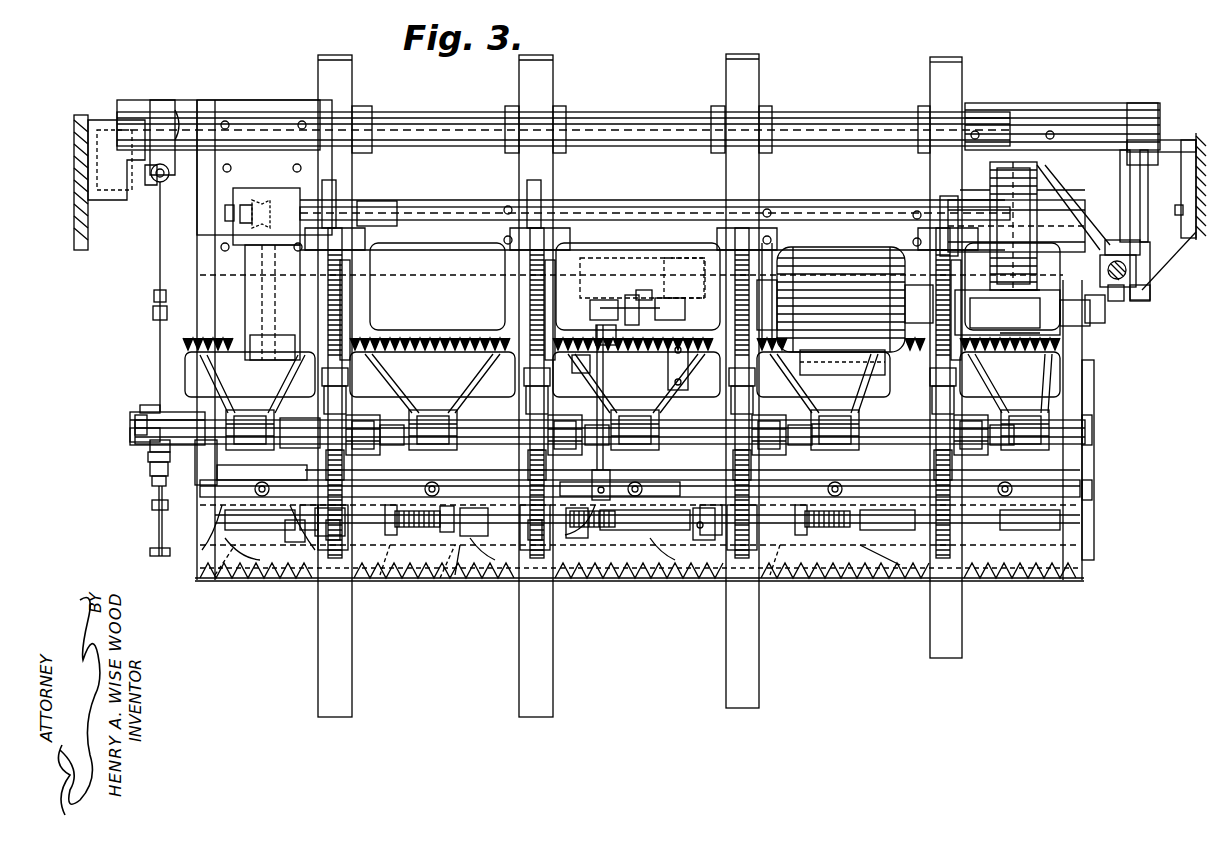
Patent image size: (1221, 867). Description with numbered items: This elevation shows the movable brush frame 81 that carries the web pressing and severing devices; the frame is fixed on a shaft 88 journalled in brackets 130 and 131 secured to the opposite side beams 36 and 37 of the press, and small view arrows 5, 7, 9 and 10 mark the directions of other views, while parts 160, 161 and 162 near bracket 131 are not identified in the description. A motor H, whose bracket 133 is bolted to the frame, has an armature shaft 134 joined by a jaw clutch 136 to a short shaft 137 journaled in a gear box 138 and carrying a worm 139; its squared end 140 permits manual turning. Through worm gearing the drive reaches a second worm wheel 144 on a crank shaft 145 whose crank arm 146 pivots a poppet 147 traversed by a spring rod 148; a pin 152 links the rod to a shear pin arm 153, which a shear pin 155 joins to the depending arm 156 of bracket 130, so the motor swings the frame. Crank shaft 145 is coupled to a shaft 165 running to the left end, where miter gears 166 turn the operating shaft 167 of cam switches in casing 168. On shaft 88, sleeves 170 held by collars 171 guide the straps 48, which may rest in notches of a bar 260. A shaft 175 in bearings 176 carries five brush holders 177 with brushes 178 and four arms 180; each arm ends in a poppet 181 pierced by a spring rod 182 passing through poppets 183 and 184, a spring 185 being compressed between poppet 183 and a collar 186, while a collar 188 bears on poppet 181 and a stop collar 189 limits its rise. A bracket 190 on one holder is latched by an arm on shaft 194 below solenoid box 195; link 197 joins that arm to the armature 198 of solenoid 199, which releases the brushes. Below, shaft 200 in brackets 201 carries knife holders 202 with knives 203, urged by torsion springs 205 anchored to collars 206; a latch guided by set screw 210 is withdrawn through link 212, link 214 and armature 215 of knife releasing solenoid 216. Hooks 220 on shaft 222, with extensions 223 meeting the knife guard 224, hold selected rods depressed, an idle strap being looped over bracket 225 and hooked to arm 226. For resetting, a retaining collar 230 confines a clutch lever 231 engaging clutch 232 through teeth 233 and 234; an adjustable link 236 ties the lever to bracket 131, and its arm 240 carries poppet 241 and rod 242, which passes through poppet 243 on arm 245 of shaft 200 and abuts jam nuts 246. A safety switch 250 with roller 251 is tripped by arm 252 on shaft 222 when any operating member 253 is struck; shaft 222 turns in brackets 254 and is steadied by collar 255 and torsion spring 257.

The side beam 36 is at (1200, 132).
The side beam 37 is at (84, 115).
The straps 48 is at (553, 80).
The shaft 88 is at (668, 112).
The bracket 130 is at (1185, 135).
The bracket 131 is at (110, 200).
The motor bracket 133 is at (862, 355).
The armature shaft 134 is at (900, 297).
The jaw clutch 136 is at (1000, 322).
The short shaft 137 is at (1018, 322).
The gear box 138 is at (1078, 324).
The worm 139 is at (1025, 343).
The squared end 140 is at (1095, 310).
The second worm wheel 144 is at (1010, 165).
The crank shaft 145 is at (960, 200).
The crank arm 146 is at (1132, 212).
The poppet 147 is at (1127, 267).
The spring rod 148 is at (1140, 276).
The pin 152 is at (1148, 242).
The shear pin arm 153 is at (1120, 150).
The shear pin 155 is at (1144, 298).
The depending arm 156 is at (1150, 293).
The yoke 160 is at (170, 128).
The pivot 161 is at (168, 178).
The pivot bracket 162 is at (150, 185).
The shaft 165 is at (822, 215).
The miter gears 166 is at (262, 200).
The operating shaft 167 is at (262, 272).
The casing 168 is at (258, 315).
The sleeves 170 is at (360, 108).
The collars 171 is at (505, 150).
The shaft 175 is at (135, 428).
The bearings 176 is at (212, 410).
The brush holders 177 is at (1038, 373).
The brush 178 is at (420, 336).
The arms 180 is at (352, 447).
The poppet 181 is at (345, 430).
The spring rod 182 is at (343, 190).
The poppet 183 is at (348, 378).
The poppet 184 is at (328, 470).
The spring 185 is at (345, 275).
The collar 186 is at (340, 205).
The collar 188 is at (344, 462).
The stop collar 189 is at (932, 404).
The bracket 190 is at (668, 368).
The shaft 194 is at (606, 345).
The solenoid box 195 is at (630, 295).
The link 197 is at (650, 300).
The armature 198 is at (684, 278).
The solenoid 199 is at (668, 298).
The shaft 200 is at (148, 525).
The brackets 201 is at (400, 560).
The knife holders 202 is at (350, 565).
The knife 203 is at (215, 578).
The torsion springs 205 is at (828, 557).
The collar 206 is at (860, 580).
The set screw 210 is at (604, 485).
The link 212 is at (597, 413).
The link 214 is at (572, 360).
The armature 215 is at (606, 318).
The knife releasing solenoid 216 is at (604, 300).
The hooks 220 is at (966, 477).
The shaft 222 is at (200, 562).
The lower extension 223 is at (335, 560).
The knife hanger or guard 224 is at (470, 585).
The bracket 225 is at (362, 248).
The arm 226 is at (325, 552).
The retaining collar 230 is at (138, 412).
The clutch lever 231 is at (132, 432).
The clutch 232 is at (150, 405).
The teeth 233 is at (140, 415).
The teeth 234 is at (150, 445).
The adjustable link 236 is at (158, 270).
The arm 240 is at (148, 470).
The poppet 241 is at (150, 480).
The rod 242 is at (158, 512).
The poppet 243 is at (152, 490).
The arm 245 is at (150, 552).
The jam nuts 246 is at (152, 505).
The safety switch 250 is at (216, 466).
The operating roller 251 is at (207, 462).
The arm 252 is at (240, 520).
The operating members 253 is at (205, 575).
The brackets 254 is at (700, 508).
The collar 255 is at (660, 540).
The torsion spring 257 is at (575, 545).
The bar 260 is at (620, 479).
The section line 5 is at (1175, 421).
The section line 7 is at (118, 322).
The section line 9 is at (578, 308).
The section line 10 is at (240, 456).
The brush frame 81 is at (650, 212).
The motor H is at (831, 299).